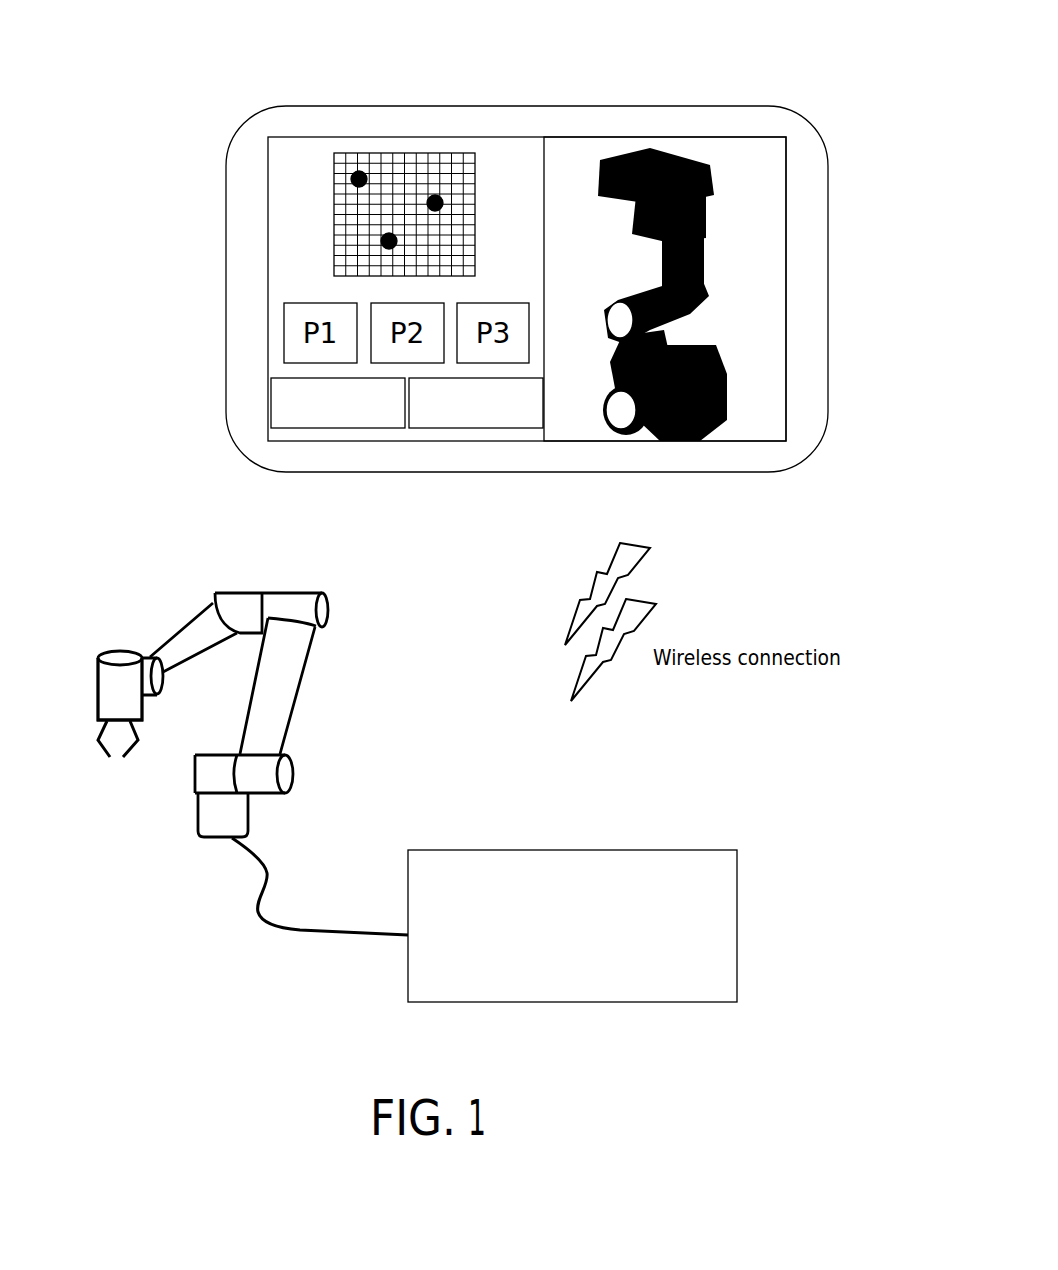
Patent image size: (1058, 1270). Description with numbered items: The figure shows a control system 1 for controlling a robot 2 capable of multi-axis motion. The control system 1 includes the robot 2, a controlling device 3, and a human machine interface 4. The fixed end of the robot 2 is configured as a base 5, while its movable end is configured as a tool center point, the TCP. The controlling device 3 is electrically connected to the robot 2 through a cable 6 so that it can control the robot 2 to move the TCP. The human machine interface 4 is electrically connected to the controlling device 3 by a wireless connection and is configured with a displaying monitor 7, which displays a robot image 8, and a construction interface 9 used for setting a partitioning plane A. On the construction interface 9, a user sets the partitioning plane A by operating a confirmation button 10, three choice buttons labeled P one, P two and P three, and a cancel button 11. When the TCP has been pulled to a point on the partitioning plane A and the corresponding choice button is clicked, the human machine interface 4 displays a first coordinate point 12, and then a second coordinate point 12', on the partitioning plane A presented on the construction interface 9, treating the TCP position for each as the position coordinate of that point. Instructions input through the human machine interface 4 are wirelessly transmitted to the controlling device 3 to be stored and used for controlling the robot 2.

The control system 1 is at (94, 51).
The robot 2 is at (238, 593).
The controlling device 3 is at (647, 850).
The human machine interface 4 is at (537, 106).
The base 5 is at (197, 813).
The cable 6 is at (307, 927).
The displaying monitor 7 is at (697, 137).
The robot image 8 is at (717, 365).
The construction interface 9 is at (286, 232).
The confirmation button 10 is at (357, 428).
The cancel button 11 is at (458, 428).
The first coordinate point 12 is at (342, 110).
The second coordinate point 12' is at (471, 128).
The partitioning plane A is at (427, 155).
The tool center point TCP is at (118, 768).